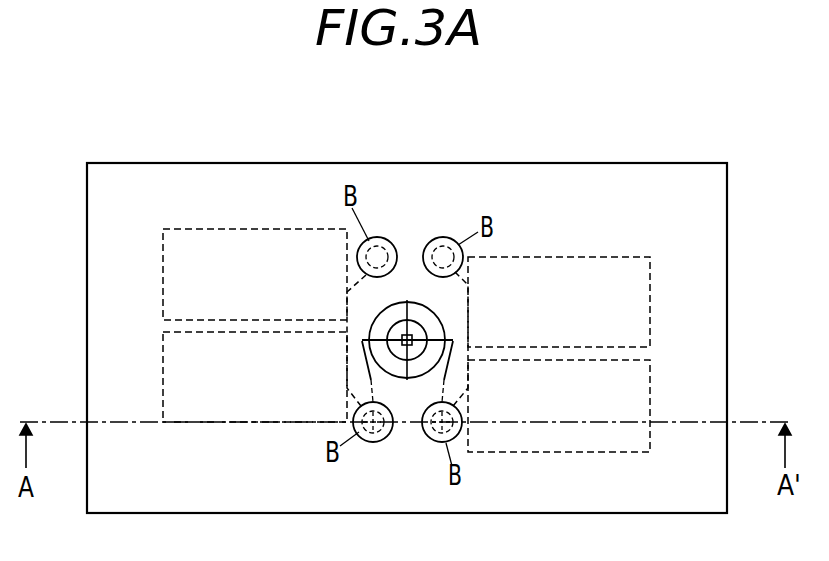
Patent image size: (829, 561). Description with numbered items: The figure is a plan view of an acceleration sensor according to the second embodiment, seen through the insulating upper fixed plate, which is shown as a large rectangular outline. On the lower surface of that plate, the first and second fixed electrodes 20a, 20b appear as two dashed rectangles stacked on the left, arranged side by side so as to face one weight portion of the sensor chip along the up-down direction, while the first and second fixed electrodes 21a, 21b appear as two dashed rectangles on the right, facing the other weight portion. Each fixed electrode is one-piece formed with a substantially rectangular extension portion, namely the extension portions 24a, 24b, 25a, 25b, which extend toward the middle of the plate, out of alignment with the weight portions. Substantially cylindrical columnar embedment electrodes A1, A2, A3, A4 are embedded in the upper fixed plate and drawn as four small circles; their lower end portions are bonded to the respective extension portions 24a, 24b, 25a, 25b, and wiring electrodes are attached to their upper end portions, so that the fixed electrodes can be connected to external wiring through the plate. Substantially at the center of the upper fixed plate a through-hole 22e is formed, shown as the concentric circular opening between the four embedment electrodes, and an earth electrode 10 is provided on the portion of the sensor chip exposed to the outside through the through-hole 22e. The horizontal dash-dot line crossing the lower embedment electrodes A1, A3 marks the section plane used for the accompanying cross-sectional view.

The earth electrode 10 is at (407, 357).
The first fixed electrode 20a is at (178, 385).
The second fixed electrode 20b is at (210, 247).
The first fixed electrode 21a is at (565, 437).
The second fixed electrode 21b is at (583, 270).
The through-hole 22e is at (407, 332).
The extension portion 24a is at (360, 408).
The extension portion 24b is at (360, 272).
The extension portion 25a is at (460, 404).
The extension portion 25b is at (458, 274).
The embedment electrode A1 is at (373, 440).
The embedment electrode A2 is at (375, 250).
The embedment electrode A3 is at (433, 437).
The embedment electrode A4 is at (441, 250).